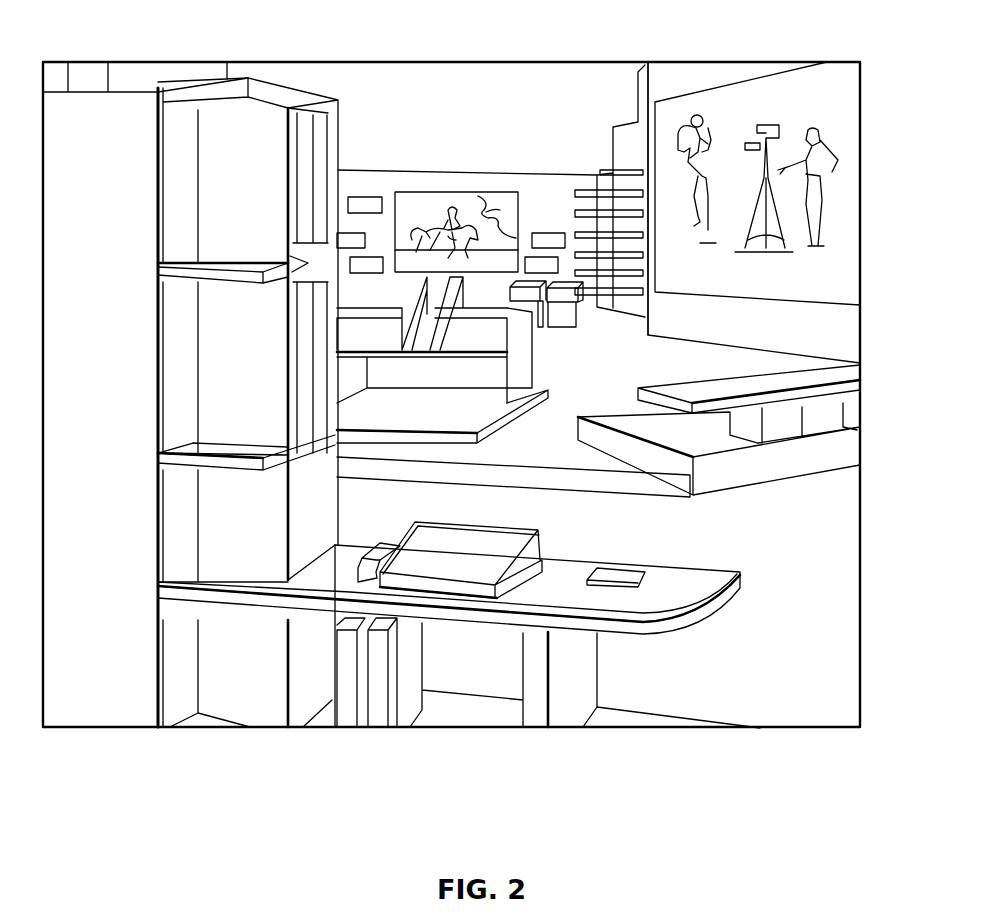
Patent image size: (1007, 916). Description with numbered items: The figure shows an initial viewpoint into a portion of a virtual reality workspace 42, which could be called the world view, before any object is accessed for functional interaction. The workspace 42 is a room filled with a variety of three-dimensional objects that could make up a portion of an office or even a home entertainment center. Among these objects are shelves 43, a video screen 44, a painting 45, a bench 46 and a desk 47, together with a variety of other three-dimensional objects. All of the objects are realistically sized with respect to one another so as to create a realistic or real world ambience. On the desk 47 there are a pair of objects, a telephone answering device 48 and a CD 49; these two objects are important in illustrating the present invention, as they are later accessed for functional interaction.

The workspace 42 is at (348, 735).
The shelves 43 is at (292, 105).
The video screen 44 is at (425, 203).
The painting 45 is at (763, 92).
The bench 46 is at (843, 377).
The desk 47 is at (537, 688).
The telephone answering device 48 is at (463, 560).
The CD 49 is at (623, 570).